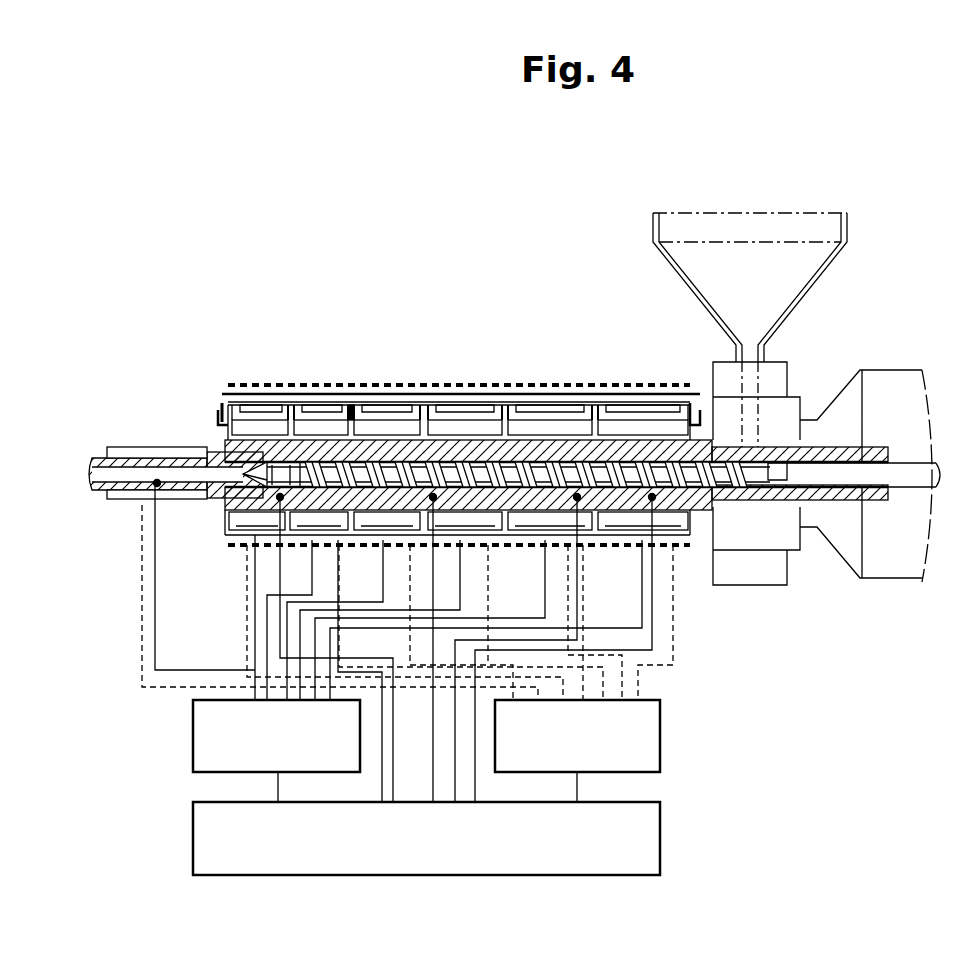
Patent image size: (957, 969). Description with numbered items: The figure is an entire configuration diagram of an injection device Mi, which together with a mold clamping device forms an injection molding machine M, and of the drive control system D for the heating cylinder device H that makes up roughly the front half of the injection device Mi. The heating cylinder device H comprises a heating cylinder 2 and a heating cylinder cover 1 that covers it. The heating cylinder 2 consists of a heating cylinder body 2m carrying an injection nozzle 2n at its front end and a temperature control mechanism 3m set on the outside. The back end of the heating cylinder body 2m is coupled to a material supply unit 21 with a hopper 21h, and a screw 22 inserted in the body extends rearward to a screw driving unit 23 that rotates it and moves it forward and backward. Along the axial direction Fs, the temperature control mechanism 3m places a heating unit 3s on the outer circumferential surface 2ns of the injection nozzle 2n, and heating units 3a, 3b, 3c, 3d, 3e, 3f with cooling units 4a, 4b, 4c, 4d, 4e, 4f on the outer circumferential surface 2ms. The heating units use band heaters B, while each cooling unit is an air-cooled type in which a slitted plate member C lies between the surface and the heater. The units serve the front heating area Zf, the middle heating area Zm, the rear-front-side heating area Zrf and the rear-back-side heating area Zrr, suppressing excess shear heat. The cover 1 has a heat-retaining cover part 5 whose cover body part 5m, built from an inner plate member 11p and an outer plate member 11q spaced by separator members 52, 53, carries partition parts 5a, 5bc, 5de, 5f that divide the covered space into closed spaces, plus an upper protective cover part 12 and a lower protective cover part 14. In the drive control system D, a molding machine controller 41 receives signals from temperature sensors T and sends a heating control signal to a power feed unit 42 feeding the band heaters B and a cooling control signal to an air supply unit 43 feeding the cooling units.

The heating cylinder cover 1 is at (248, 376).
The heating cylinder 2 is at (214, 540).
The heating cylinder body 2m is at (245, 522).
The injection nozzle 2n is at (94, 460).
The outer circumferential surface of the injection nozzle 2ns is at (108, 447).
The outer circumferential surface of the heating cylinder body 2ms is at (220, 410).
The heating unit 3s is at (165, 447).
The heating unit 3a is at (240, 410).
The heating unit 3b is at (303, 410).
The heating unit 3c is at (412, 410).
The heating unit 3d is at (465, 410).
The heating unit 3e is at (566, 410).
The heating unit 3f is at (640, 410).
The temperature control mechanism 3m is at (500, 609).
The cooling unit 4a is at (265, 418).
The cooling unit 4b is at (325, 418).
The cooling unit 4c is at (386, 418).
The cooling unit 4d is at (480, 418).
The cooling unit 4e is at (582, 418).
The cooling unit 4f is at (655, 418).
The heat-retaining cover part 5 is at (604, 380).
The partition part 5a is at (216, 417).
The partition part 5bc is at (347, 405).
The partition part 5de is at (510, 400).
The cover body part 5m is at (546, 402).
The partition part 5f is at (722, 360).
The inner plate member 11p is at (680, 385).
The outer plate member 11q is at (740, 335).
The upper protective cover part 12 is at (436, 418).
The lower protective cover part 14 is at (690, 548).
The material supply unit 21 is at (812, 348).
The hopper 21h is at (757, 212).
The screw 22 is at (355, 408).
The screw driving unit 23 is at (824, 582).
The molding machine controller 41 is at (660, 843).
The power feed unit 42 is at (660, 740).
The air supply unit 43 is at (193, 742).
The front-side separator member 52 is at (232, 394).
The back-side separator member 53 is at (690, 408).
The temperature sensor T is at (158, 492).
The band heater B is at (372, 540).
The plate member C is at (700, 532).
The drive control system D is at (758, 820).
The axial direction Fs is at (102, 298).
The injection device Mi is at (318, 215).
The heating cylinder device H is at (370, 247).
The injection molding machine M is at (465, 213).
The front heating area Zf is at (285, 277).
The middle heating area Zm is at (409, 287).
The rear-front-side heating area Zrf is at (538, 307).
The rear-back-side heating area Zrr is at (615, 325).